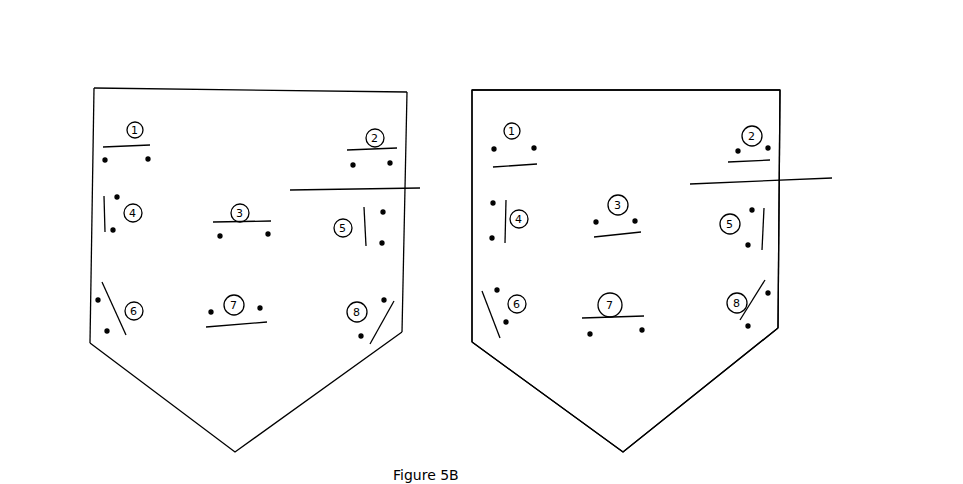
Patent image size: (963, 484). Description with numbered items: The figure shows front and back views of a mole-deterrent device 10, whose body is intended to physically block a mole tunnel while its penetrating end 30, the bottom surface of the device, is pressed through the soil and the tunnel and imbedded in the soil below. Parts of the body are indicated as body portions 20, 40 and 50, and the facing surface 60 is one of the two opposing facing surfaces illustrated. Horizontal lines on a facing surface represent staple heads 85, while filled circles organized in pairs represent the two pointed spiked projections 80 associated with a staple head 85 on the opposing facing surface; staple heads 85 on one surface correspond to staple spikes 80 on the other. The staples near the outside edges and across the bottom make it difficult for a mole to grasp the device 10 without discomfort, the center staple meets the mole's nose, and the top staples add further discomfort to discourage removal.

The device 10 is at (798, 36).
The part of the body 20 is at (328, 92).
The penetrating end 30 is at (237, 434).
The part of the body 40 is at (92, 102).
The part of the body 50 is at (406, 108).
The facing surface 60 is at (571, 185).
The spiked projections 80 is at (360, 338).
The staple heads 85 is at (382, 322).